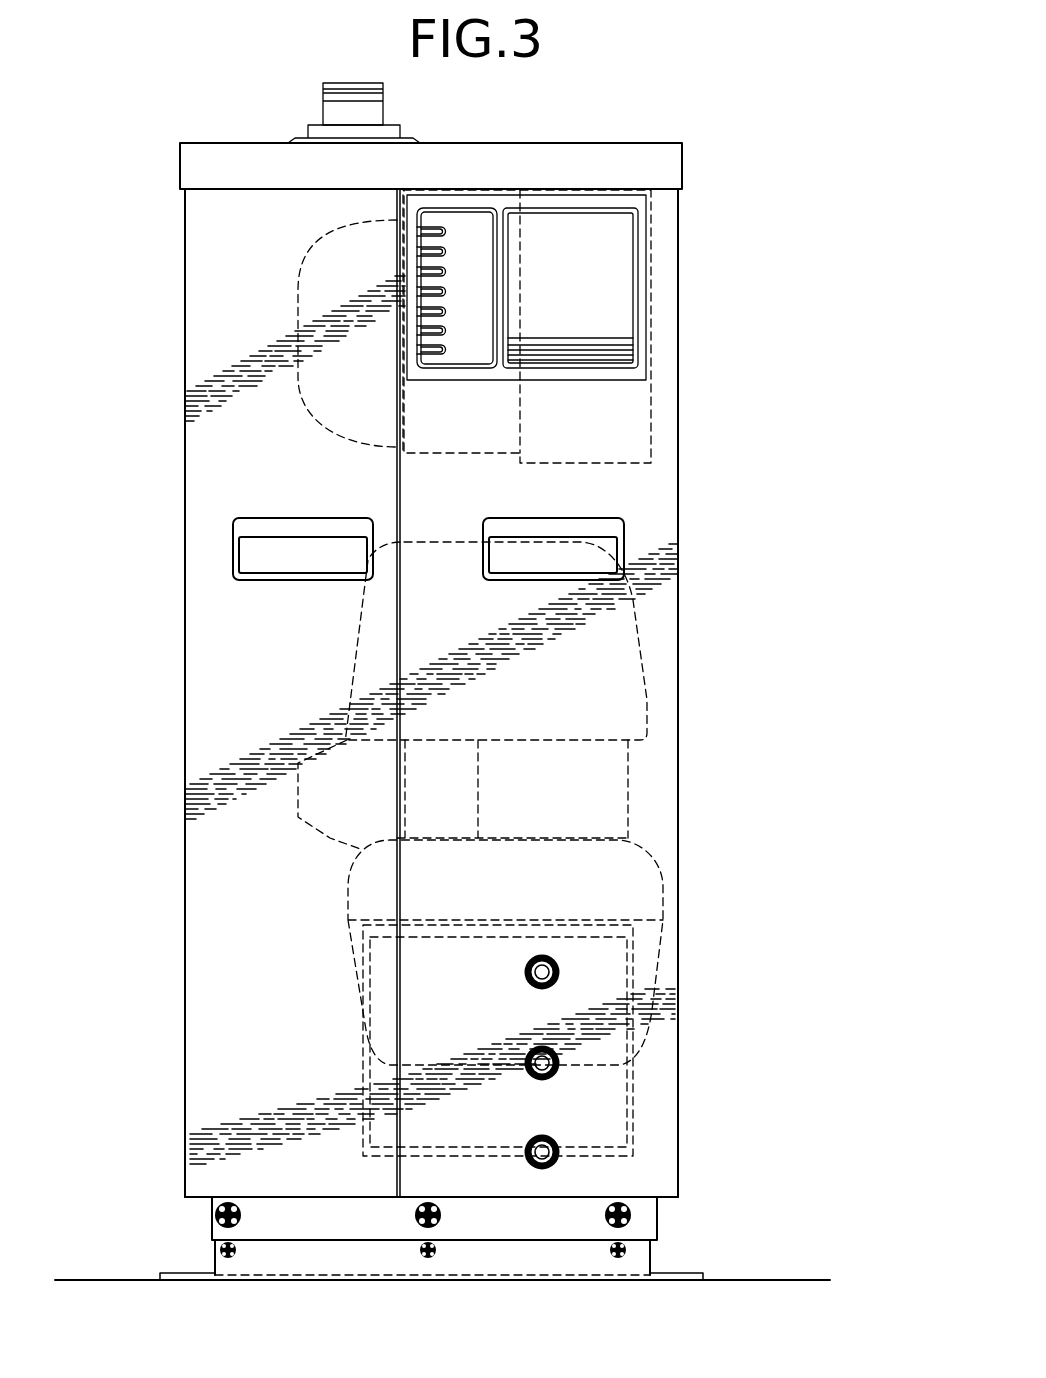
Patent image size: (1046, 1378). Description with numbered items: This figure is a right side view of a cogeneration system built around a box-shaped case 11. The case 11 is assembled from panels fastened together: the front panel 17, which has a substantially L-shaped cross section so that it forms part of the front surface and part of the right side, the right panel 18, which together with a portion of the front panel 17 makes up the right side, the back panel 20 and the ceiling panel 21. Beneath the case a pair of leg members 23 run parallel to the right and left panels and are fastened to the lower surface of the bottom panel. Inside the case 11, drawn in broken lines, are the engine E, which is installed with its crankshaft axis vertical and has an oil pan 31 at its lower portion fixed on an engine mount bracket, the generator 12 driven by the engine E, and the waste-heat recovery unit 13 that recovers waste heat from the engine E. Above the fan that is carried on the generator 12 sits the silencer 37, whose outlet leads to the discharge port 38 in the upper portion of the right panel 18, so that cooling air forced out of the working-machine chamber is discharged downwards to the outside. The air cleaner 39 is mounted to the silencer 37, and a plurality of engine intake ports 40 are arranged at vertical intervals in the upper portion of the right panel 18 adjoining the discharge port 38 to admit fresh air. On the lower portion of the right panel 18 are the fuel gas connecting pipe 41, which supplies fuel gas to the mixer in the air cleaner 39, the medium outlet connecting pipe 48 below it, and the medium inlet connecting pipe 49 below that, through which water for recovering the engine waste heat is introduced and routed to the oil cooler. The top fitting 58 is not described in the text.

The case 11 is at (185, 958).
The generator 12 is at (342, 683).
The waste-heat recovery unit 13 is at (627, 1101).
The front panel 17 is at (185, 835).
The right panel 18 is at (660, 553).
The back panel 20 is at (680, 757).
The ceiling panel 21 is at (548, 145).
The leg members 23 is at (212, 1260).
The oil pan 31 is at (650, 1022).
The silencer 37 is at (651, 407).
The discharge port 38 is at (578, 364).
The air cleaner 39 is at (313, 405).
The engine intake ports 40 is at (417, 247).
The fuel gas connecting pipe 41 is at (525, 980).
The medium outlet connecting pipe 48 is at (548, 1078).
The medium inlet connecting pipe 49 is at (535, 1167).
The hose connector 58 is at (335, 115).
The engine E is at (332, 837).